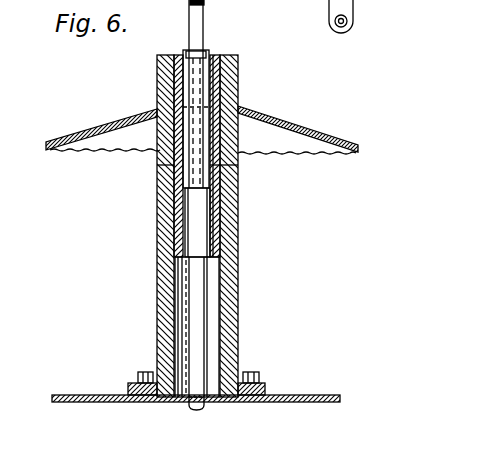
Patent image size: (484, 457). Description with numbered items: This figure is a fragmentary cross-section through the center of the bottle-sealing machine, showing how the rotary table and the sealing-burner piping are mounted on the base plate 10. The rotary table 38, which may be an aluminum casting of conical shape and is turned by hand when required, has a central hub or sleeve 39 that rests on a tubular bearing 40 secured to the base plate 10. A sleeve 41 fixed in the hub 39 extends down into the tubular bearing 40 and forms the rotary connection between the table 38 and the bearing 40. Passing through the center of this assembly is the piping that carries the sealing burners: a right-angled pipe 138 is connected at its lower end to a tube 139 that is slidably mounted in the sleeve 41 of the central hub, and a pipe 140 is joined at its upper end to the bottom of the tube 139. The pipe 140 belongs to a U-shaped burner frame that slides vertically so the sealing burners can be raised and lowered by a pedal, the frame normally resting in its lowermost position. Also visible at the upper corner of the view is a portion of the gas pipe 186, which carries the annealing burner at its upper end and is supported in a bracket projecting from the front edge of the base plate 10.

The base plate 10 is at (300, 395).
The rotary table 38 is at (106, 124).
The central hub 39 is at (157, 133).
The tubular bearing 40 is at (162, 201).
The sleeve 41 is at (212, 218).
The right-angled pipe 138 is at (203, 30).
The tube 139 is at (203, 74).
The pipe 140 is at (197, 298).
The gas pipe 186 is at (353, 23).